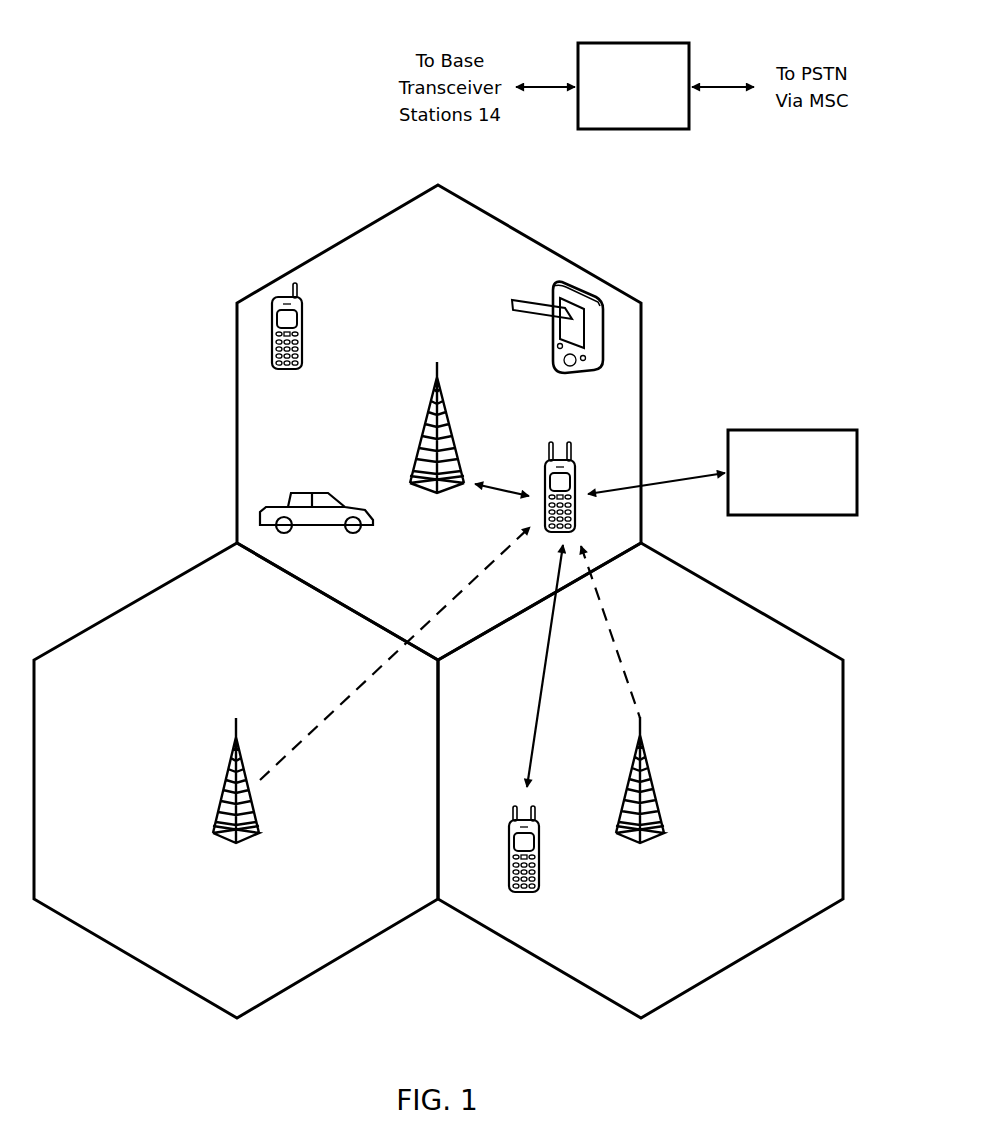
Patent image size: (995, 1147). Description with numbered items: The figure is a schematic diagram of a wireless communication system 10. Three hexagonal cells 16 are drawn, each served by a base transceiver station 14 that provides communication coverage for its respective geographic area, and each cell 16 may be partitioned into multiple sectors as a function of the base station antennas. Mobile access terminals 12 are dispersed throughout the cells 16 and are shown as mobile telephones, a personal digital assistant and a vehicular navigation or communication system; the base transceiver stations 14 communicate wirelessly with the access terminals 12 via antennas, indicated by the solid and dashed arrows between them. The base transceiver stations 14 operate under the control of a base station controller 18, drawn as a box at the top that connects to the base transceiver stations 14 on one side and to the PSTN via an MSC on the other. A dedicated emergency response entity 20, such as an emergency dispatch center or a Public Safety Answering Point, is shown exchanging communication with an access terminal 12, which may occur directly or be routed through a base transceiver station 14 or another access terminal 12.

The wireless communication system 10 is at (135, 263).
The mobile access terminal 12 is at (302, 313).
The base transceiver station 14 is at (442, 400).
The cell 16 is at (362, 229).
The base station controller 18 is at (658, 43).
The emergency response entity 20 is at (810, 430).